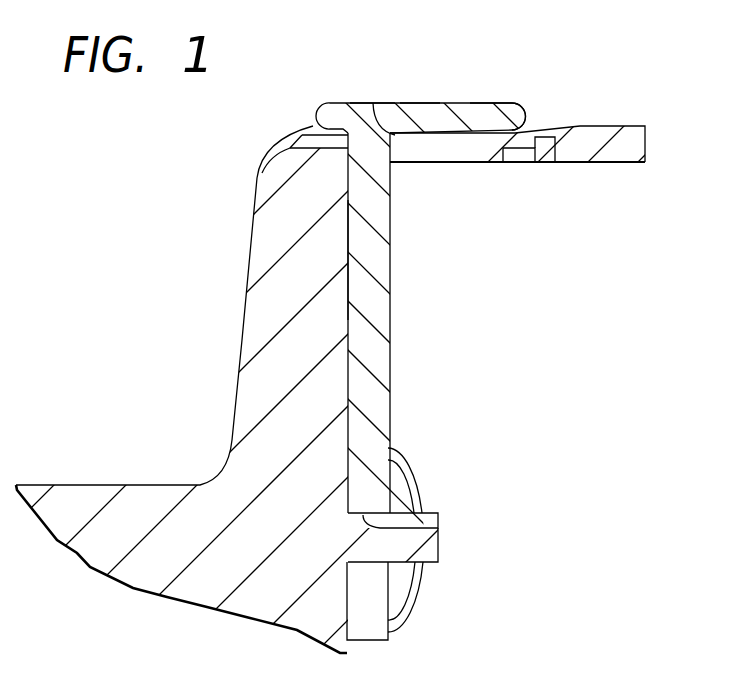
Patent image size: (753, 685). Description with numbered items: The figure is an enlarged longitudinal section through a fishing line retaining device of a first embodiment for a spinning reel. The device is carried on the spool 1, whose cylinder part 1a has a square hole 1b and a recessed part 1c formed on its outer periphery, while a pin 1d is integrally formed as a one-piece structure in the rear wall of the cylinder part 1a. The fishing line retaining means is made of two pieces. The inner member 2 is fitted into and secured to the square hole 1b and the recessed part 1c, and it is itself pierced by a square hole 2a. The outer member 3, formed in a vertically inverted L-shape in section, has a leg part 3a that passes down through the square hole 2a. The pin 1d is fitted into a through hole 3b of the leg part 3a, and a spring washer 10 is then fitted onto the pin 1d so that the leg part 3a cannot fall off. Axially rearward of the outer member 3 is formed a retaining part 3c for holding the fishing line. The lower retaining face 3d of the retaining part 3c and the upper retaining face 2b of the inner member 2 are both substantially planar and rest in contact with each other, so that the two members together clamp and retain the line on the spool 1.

The spool 1 is at (242, 317).
The cylinder part 1a is at (640, 142).
The square hole 1b is at (493, 163).
The recessed part 1c is at (550, 163).
The pin 1d is at (440, 555).
The inner member 2 is at (545, 132).
The square hole 2a is at (377, 104).
The upper retaining face 2b is at (420, 104).
The outer member 3 is at (348, 103).
The leg part 3a is at (348, 255).
The through hole 3b is at (440, 527).
The retaining part 3c is at (492, 113).
The lower retaining face 3d is at (449, 163).
The spring washer 10 is at (417, 583).